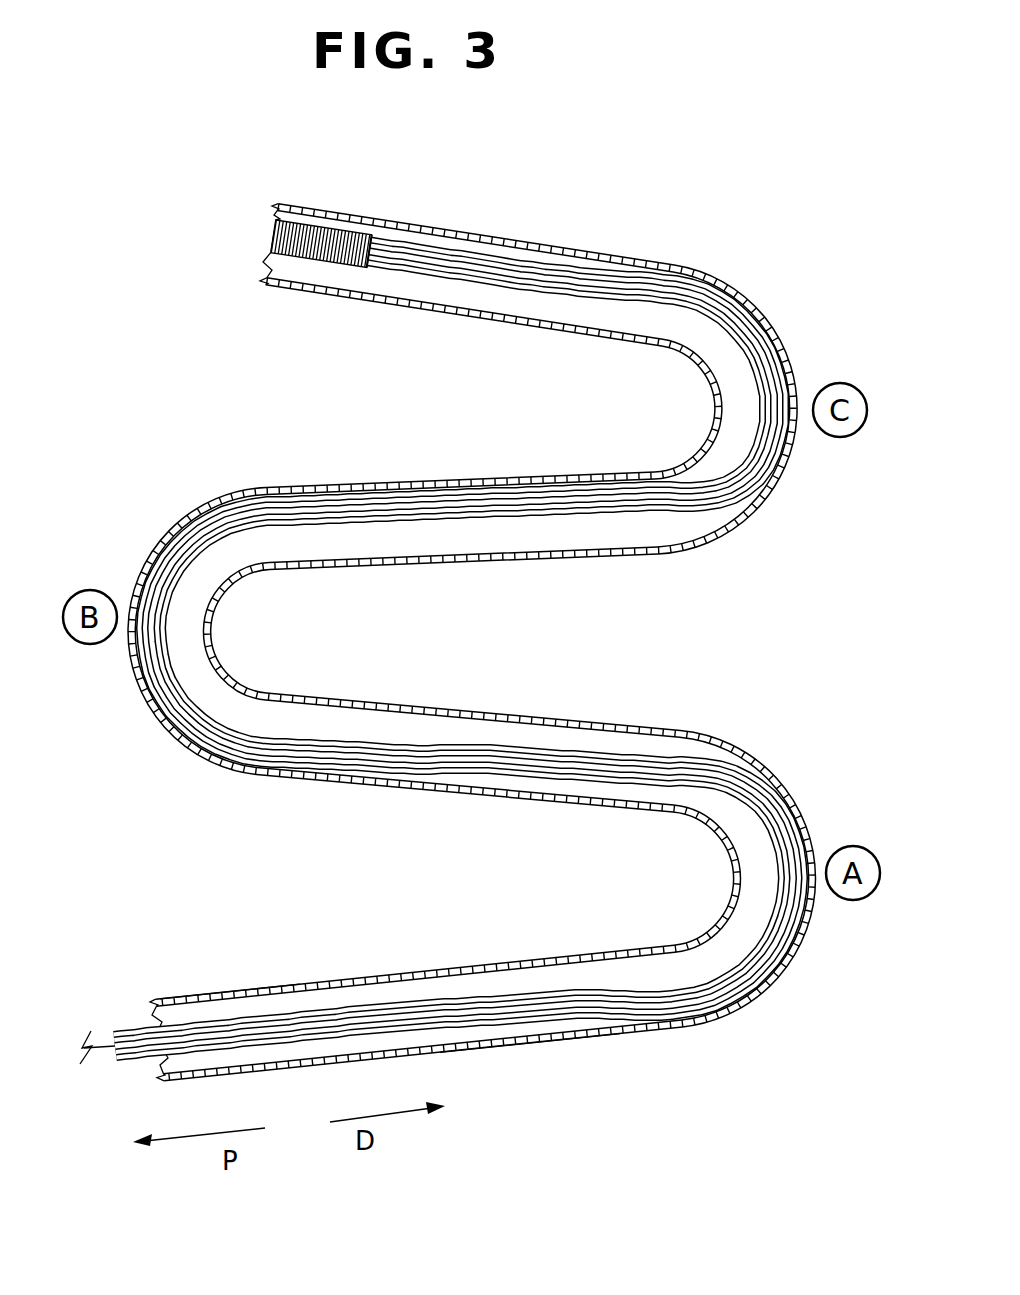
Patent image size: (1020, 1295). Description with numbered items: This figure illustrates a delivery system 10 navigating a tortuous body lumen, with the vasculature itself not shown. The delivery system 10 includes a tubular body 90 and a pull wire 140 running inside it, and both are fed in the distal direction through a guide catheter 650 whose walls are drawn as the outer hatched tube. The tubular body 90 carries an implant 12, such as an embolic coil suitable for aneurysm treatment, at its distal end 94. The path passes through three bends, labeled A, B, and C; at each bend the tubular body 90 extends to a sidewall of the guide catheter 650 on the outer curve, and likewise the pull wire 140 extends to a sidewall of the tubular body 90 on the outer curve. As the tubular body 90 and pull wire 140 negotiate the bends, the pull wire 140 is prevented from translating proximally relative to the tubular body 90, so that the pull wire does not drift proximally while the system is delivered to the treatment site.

The delivery system 10 is at (522, 781).
The implant 12 is at (346, 232).
The distal end 94 is at (361, 266).
The pull wire 140 is at (463, 500).
The guide catheter 650 is at (203, 995).
The tubular body 90 is at (541, 1010).